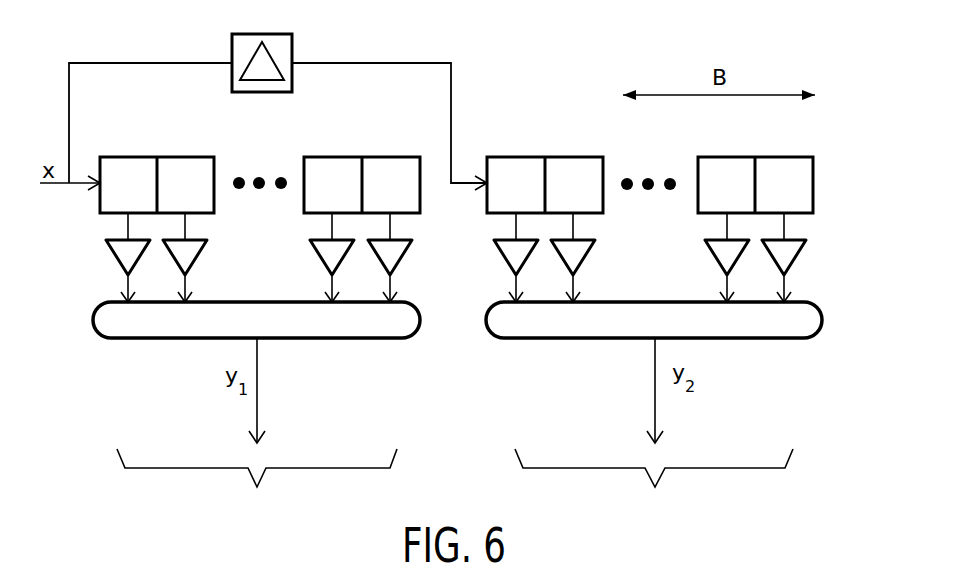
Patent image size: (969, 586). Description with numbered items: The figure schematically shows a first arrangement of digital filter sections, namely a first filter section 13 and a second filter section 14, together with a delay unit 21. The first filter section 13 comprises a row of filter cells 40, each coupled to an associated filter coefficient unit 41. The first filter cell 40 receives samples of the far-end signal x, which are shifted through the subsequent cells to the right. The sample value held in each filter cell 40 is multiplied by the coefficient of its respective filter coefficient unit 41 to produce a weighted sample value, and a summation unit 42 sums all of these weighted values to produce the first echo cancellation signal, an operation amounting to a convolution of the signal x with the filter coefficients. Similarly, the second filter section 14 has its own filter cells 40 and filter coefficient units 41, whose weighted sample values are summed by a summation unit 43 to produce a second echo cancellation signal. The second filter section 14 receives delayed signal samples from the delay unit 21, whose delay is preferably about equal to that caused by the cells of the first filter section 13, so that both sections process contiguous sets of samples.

The delay unit 21 is at (292, 52).
The filter cell 40 is at (848, 182).
The filter coefficient unit 41 is at (823, 260).
The summation unit 42 is at (98, 337).
The summation unit 43 is at (822, 318).
The first filter section 13 is at (257, 484).
The second filter section 14 is at (654, 484).